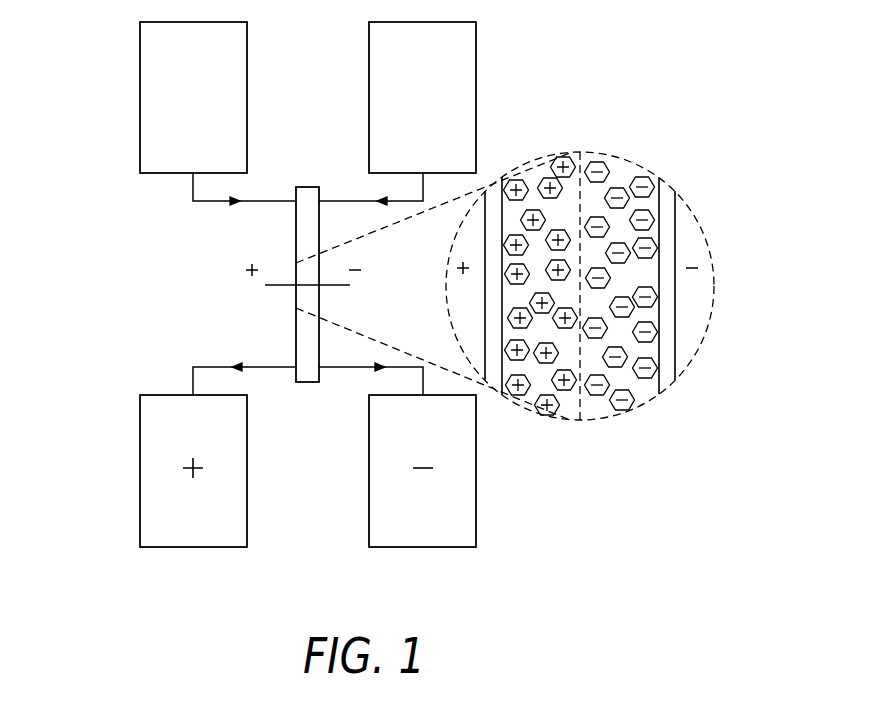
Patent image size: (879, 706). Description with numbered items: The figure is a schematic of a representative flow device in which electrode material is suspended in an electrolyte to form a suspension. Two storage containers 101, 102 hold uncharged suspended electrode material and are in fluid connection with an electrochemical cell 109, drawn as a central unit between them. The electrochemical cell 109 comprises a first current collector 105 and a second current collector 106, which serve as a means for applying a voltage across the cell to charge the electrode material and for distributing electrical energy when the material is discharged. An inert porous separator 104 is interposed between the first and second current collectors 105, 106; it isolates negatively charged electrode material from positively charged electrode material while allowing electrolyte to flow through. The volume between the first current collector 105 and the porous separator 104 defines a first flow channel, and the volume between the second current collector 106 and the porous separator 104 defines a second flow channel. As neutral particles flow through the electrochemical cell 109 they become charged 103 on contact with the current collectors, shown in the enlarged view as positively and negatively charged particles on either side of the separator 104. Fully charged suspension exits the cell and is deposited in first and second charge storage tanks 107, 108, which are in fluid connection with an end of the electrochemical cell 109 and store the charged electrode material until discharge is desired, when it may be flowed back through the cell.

The storage container 101 is at (124, 89).
The storage container 102 is at (353, 89).
The charged electrode material 103 is at (531, 172).
The inert porous separator 104 is at (579, 400).
The first current collector 105 is at (480, 303).
The second current collector 106 is at (686, 318).
The first charge storage tank 107 is at (124, 463).
The second charge storage tank 108 is at (353, 463).
The electrochemical cell 109 is at (301, 225).